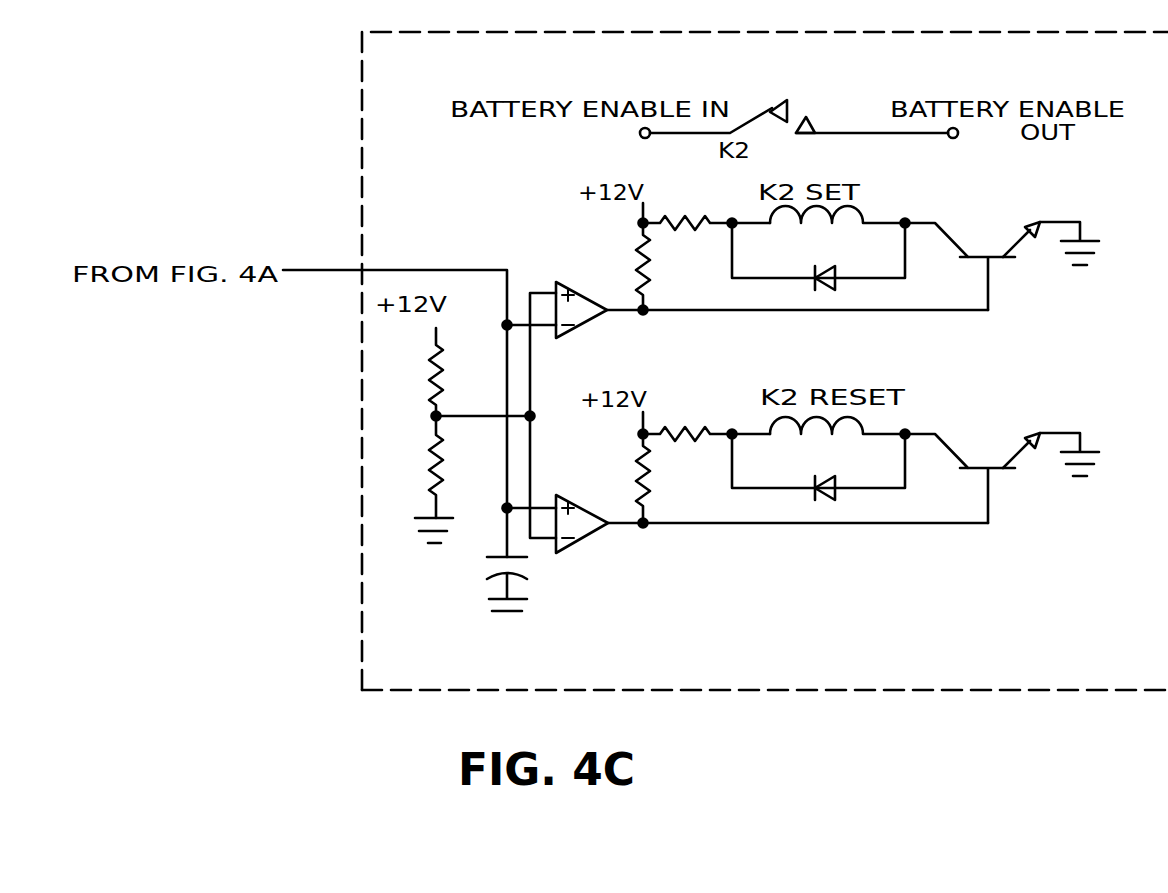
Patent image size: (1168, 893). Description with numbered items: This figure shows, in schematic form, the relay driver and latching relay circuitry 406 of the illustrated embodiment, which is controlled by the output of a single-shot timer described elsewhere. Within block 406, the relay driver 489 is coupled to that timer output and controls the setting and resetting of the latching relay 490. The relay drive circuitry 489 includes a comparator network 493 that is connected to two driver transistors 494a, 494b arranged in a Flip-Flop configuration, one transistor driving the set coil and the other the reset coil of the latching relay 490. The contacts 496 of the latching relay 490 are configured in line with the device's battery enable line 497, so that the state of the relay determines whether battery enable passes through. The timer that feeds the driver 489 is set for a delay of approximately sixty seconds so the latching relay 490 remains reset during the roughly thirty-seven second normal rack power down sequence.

The relay driver and latching relay circuitry 406 is at (895, 692).
The relay driver 489 is at (867, 503).
The latching relay 490 is at (869, 284).
The comparator network 493 is at (542, 290).
The driver transistor 494a is at (898, 536).
The driver transistor 494b is at (949, 326).
The latching relay contacts 496 is at (773, 120).
The battery enable line 497 is at (922, 137).